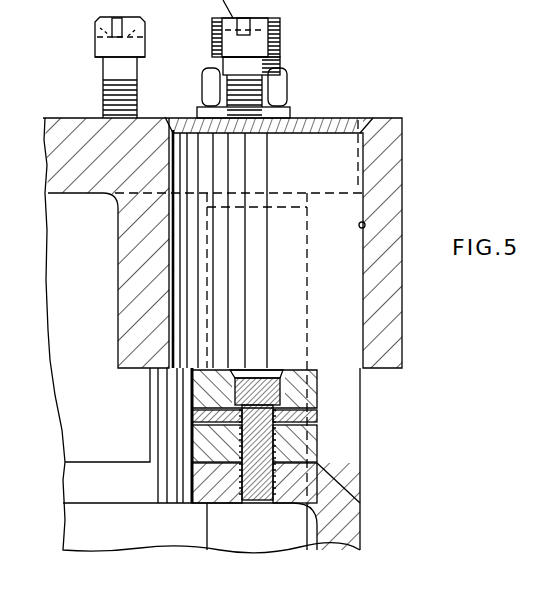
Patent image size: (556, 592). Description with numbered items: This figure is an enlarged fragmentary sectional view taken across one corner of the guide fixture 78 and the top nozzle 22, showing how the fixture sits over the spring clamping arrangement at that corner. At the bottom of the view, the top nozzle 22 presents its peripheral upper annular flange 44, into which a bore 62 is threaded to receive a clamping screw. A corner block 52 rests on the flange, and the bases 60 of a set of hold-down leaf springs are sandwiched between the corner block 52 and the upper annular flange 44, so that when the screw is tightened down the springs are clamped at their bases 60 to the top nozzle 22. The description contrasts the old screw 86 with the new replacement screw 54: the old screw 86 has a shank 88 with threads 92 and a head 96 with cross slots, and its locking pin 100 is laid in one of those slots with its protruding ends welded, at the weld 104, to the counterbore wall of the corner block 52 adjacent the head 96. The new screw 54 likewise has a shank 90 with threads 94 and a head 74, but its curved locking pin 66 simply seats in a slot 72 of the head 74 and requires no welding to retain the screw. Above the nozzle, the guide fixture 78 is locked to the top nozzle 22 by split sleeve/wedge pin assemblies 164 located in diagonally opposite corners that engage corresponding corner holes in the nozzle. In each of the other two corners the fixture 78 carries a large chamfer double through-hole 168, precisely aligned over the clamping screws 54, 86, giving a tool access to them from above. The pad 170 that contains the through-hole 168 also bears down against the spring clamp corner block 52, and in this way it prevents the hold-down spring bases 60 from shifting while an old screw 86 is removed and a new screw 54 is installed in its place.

The top nozzle 22 is at (357, 497).
The upper annular flange 44 is at (318, 463).
The corner block 52 is at (193, 390).
The spring clamping screw 54 is at (93, 48).
The bases of the leaf springs 60 is at (193, 420).
The bore 62 is at (243, 495).
The locking pin 66 is at (115, 18).
The slot 72 is at (132, 42).
The head 74 is at (97, 43).
The guide fixture 78 is at (420, 128).
The old screw 86 is at (308, 368).
The shank 88 is at (280, 417).
The shank 90 is at (138, 65).
The threads 92 is at (277, 438).
The threads 94 is at (138, 97).
The head 96 is at (280, 393).
The locking pin 100 is at (261, 368).
The weld 104 is at (302, 59).
The split sleeve/wedge pin assembly 164 is at (282, 53).
The chamfer double through-hole 168 is at (365, 223).
The pad 170 is at (452, 0).